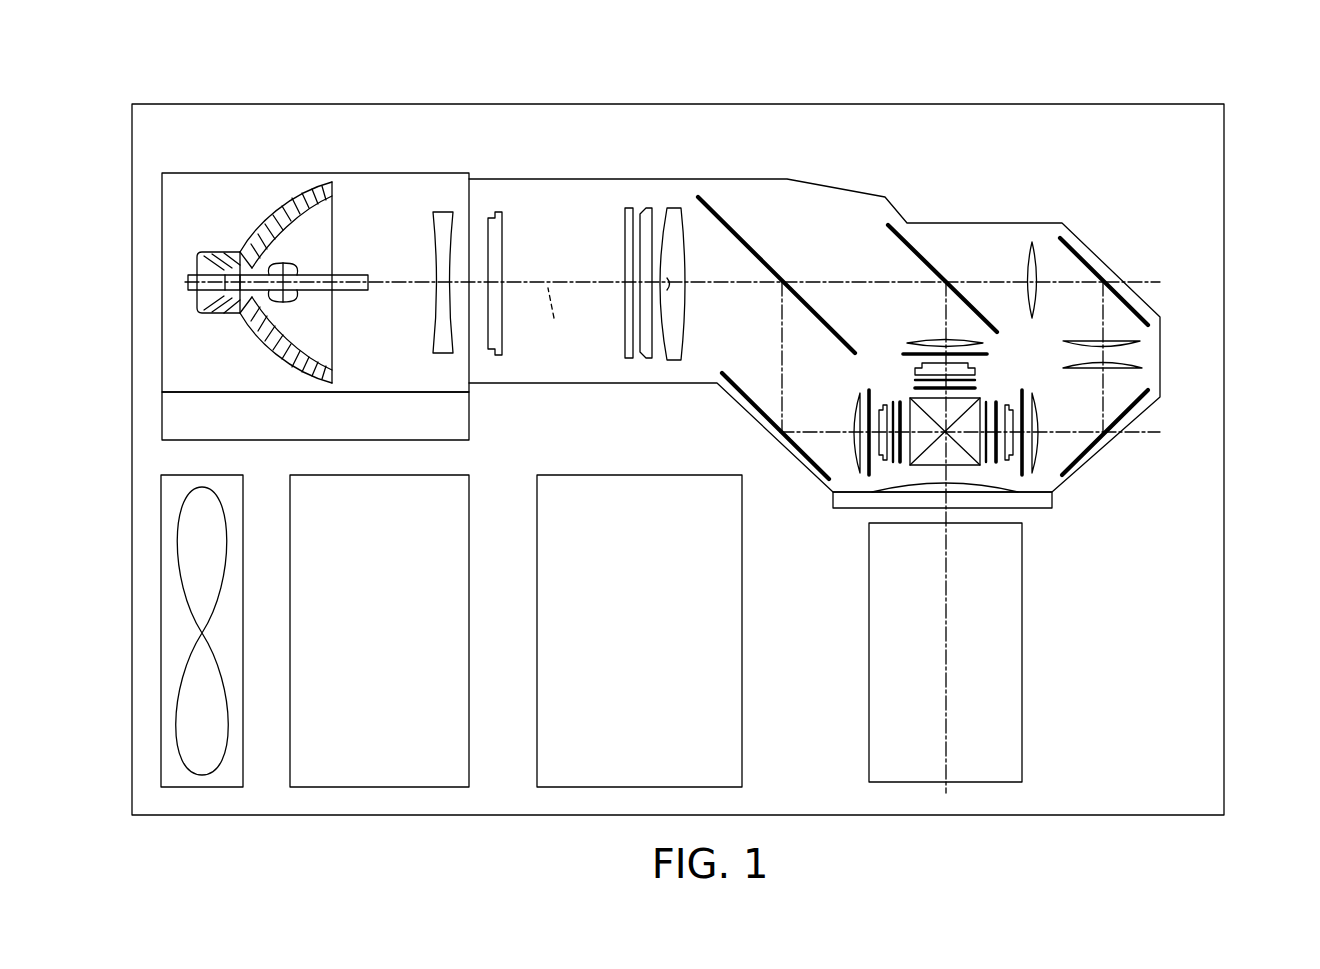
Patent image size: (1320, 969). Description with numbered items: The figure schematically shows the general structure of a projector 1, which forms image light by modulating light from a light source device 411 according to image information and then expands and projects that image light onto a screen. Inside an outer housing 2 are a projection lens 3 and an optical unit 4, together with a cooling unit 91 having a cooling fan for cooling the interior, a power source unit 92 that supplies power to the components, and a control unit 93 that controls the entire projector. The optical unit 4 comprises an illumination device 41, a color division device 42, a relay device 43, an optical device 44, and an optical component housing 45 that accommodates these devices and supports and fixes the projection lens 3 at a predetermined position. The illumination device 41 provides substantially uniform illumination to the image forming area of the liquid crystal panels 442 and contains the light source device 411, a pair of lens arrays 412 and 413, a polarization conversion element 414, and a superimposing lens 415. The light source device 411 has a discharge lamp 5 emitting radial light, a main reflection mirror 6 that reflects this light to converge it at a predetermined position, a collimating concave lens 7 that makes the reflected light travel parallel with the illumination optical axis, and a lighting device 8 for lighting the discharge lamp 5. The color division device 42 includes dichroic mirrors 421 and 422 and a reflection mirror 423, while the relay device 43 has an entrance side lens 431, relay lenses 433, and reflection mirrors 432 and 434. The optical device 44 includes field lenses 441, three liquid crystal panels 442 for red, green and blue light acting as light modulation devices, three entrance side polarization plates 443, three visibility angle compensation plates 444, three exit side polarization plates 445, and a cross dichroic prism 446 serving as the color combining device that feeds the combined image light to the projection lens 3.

The projector 1 is at (1003, 83).
The outer housing 2 is at (1228, 230).
The projection lens 3 is at (1022, 665).
The optical unit 4 is at (1130, 128).
The discharge lamp 5 is at (290, 262).
The main reflection mirror 6 is at (305, 190).
The collimating concave lens 7 is at (443, 212).
The lighting device 8 is at (460, 415).
The illumination device 41 is at (631, 149).
The color division device 42 is at (838, 216).
The relay device 43 is at (1108, 248).
The optical device 44 is at (1040, 378).
The optical component housing 45 is at (958, 222).
The cooling unit 91 is at (216, 475).
The power source unit 92 is at (455, 475).
The control unit 93 is at (665, 475).
The light source device 411 is at (197, 132).
The lens array 412 is at (500, 250).
The lens array 413 is at (630, 210).
The polarization conversion element 414 is at (653, 215).
The superimposing lens 415 is at (674, 232).
The dichroic mirror 421 is at (723, 222).
The dichroic mirror 422 is at (930, 260).
The reflection mirror 423 is at (740, 372).
The entrance side lens 431 is at (1032, 242).
The reflection mirror 432 is at (1125, 300).
The relay lens 433 is at (1145, 366).
The reflection mirror 434 is at (1135, 408).
The field lens 441 is at (935, 340).
The liquid crystal panel 442 is at (912, 363).
The entrance side polarization plate 443 is at (903, 352).
The visibility angle compensation plate 444 is at (893, 402).
The exit side polarization plate 445 is at (976, 388).
The cross dichroic prism 446 is at (950, 466).